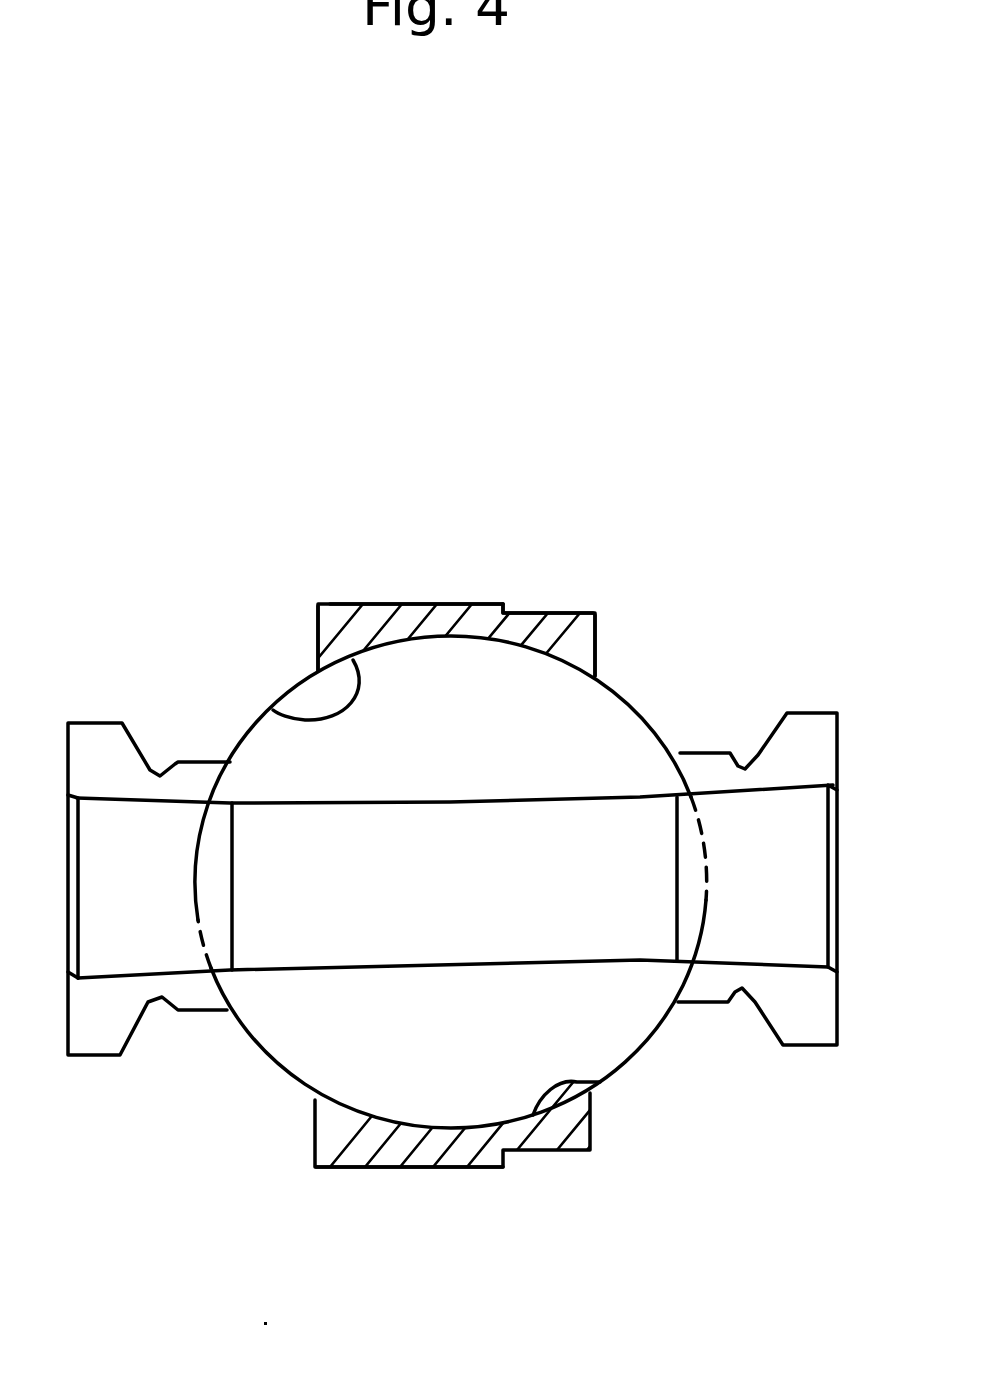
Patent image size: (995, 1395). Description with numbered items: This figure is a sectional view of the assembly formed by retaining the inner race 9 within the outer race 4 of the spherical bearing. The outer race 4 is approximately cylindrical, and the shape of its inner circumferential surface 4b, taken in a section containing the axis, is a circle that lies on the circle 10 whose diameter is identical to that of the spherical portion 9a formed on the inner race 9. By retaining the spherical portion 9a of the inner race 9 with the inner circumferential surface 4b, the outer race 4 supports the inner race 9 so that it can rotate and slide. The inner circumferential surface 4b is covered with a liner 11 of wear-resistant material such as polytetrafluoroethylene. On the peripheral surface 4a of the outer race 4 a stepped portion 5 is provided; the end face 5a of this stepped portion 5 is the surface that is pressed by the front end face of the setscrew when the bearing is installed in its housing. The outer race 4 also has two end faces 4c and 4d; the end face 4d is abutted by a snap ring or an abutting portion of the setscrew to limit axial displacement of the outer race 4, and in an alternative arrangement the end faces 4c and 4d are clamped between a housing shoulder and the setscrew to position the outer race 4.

The outer race 4 is at (378, 602).
The peripheral surface 4a is at (422, 602).
The inner circumferential surface 4b is at (273, 710).
The end face 4c is at (317, 630).
The end face 4d is at (596, 651).
The stepped portion 5 is at (560, 608).
The end face of the stepped portion 5a is at (503, 612).
The inner race 9 is at (275, 1070).
The spherical portion 9a is at (396, 1130).
The circle 10 is at (712, 882).
The liner 11 is at (600, 1087).